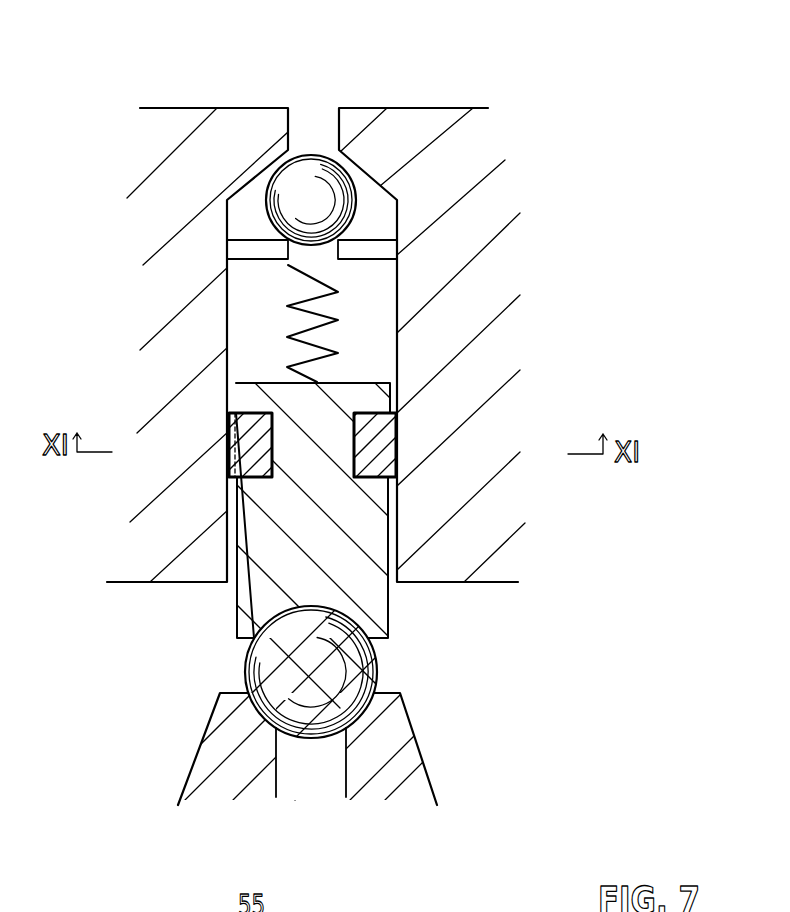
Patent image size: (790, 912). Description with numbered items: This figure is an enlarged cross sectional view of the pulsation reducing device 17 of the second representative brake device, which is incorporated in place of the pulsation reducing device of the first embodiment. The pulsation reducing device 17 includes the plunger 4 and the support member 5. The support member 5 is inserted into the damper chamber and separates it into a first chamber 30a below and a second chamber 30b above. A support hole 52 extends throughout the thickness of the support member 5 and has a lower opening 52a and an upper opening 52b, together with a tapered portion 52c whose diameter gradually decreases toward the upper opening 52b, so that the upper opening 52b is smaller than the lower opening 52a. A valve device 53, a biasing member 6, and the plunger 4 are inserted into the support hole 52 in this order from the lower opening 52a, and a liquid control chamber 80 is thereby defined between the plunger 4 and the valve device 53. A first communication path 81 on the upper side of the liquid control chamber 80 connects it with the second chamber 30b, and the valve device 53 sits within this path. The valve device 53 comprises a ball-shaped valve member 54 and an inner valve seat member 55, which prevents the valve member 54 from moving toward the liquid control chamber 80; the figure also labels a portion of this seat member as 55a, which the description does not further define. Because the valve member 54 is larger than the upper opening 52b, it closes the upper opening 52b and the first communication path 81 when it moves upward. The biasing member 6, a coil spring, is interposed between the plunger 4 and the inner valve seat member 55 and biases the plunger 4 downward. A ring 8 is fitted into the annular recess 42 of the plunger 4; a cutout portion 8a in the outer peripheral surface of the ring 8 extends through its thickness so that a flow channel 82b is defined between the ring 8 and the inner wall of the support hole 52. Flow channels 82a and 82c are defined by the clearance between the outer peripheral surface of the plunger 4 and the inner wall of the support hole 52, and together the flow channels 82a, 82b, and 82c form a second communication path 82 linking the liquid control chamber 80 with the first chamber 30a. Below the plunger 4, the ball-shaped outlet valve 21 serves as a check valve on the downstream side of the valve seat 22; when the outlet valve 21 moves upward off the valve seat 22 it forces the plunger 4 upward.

The plunger 4 is at (350, 458).
The annular recess 42 is at (367, 475).
The support member 5 is at (440, 118).
The biasing member 6 is at (310, 317).
The ring 8 is at (383, 441).
The cutout portion 8a is at (227, 446).
The pulsation reducing device 17 is at (558, 156).
The outlet valve 21 is at (325, 672).
The valve seat 22 is at (407, 775).
The first chamber 30a is at (180, 655).
The second chamber 30b is at (423, 58).
The support hole 52 is at (383, 298).
The lower opening 52a is at (392, 585).
The upper opening 52b is at (338, 128).
The tapered portion 52c is at (363, 173).
The valve device 53 is at (368, 147).
The valve member 54 is at (303, 207).
The inner valve seat member 55 is at (257, 248).
The retainer seat surface 55a is at (398, 249).
The liquid control chamber 80 is at (248, 295).
The first communication path 81 is at (316, 148).
The second communication path 82 is at (156, 505).
The flow channel 82a is at (228, 537).
The flow channel 82b is at (227, 470).
The flow channel 82c is at (227, 400).